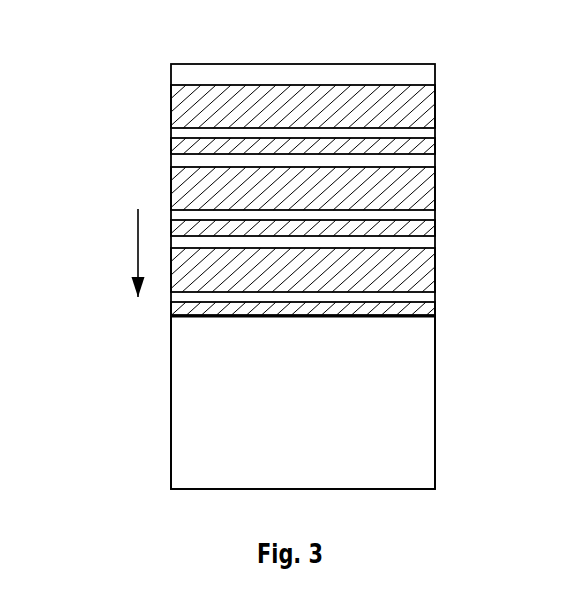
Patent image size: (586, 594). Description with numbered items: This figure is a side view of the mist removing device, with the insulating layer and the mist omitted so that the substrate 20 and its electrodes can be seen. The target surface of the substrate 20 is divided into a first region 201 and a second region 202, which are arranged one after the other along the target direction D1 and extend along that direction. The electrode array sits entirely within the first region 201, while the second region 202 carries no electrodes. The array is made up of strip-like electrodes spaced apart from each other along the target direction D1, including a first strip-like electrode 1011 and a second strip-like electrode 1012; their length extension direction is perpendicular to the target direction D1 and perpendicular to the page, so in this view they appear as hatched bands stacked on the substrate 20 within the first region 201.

The substrate 20 is at (282, 253).
The first strip-like electrode 1011 is at (176, 113).
The second strip-like electrode 1012 is at (176, 143).
The first region 201 is at (435, 64).
The second region 202 is at (453, 316).
The target direction D1 is at (125, 253).